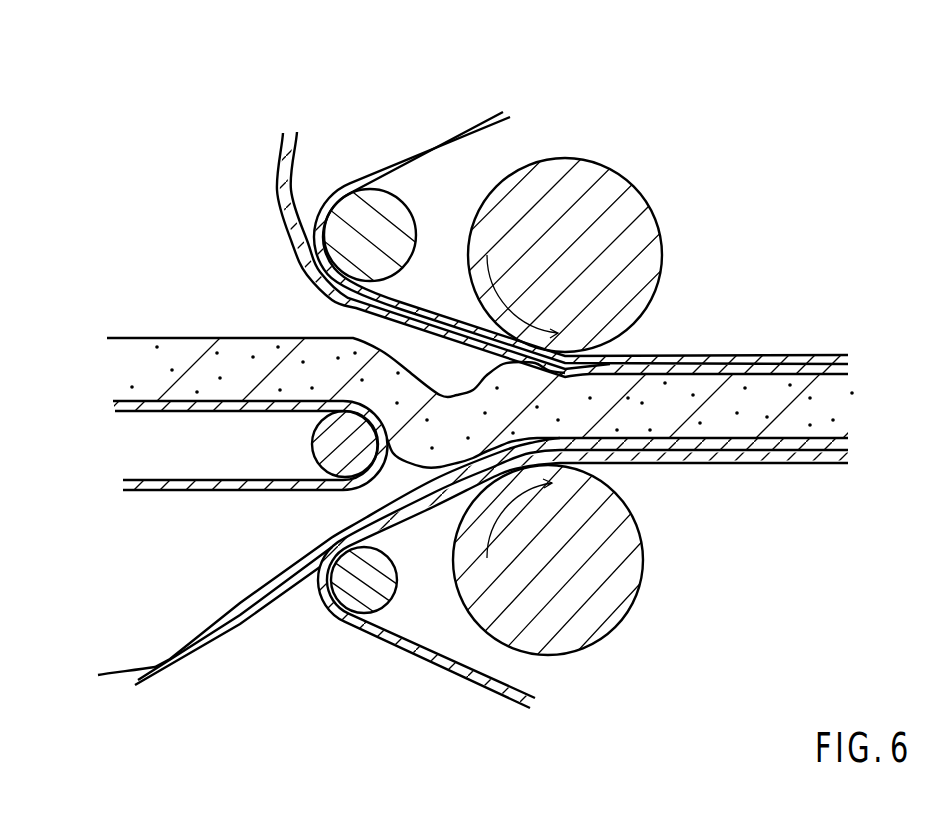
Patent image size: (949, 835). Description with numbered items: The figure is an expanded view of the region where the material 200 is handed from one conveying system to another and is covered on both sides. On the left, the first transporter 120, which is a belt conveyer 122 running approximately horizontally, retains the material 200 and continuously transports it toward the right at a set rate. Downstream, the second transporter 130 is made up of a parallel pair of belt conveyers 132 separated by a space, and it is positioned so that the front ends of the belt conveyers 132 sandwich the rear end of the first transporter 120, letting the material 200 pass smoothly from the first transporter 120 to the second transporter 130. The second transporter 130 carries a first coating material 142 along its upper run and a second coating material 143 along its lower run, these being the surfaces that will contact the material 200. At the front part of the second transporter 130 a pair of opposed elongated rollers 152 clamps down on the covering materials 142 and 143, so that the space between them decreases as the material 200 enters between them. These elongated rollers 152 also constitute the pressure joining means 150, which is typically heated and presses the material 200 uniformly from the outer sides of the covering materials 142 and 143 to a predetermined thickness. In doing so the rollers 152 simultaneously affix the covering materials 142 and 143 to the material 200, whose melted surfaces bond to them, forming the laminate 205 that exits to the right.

The first transporter 120 is at (118, 459).
The belt conveyer 122 is at (158, 492).
The second transporter 130 is at (727, 114).
The belt conveyer 132 is at (441, 145).
The first coating material 142 is at (280, 170).
The second coating material 143 is at (218, 634).
The pressure joining means 150 is at (599, 669).
The elongated roller 152 is at (620, 173).
The material 200 is at (170, 338).
The laminate 205 is at (780, 374).